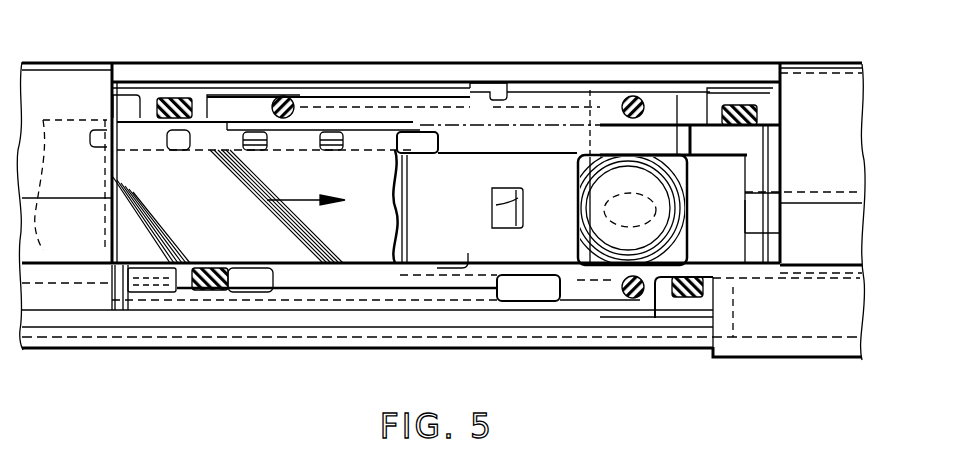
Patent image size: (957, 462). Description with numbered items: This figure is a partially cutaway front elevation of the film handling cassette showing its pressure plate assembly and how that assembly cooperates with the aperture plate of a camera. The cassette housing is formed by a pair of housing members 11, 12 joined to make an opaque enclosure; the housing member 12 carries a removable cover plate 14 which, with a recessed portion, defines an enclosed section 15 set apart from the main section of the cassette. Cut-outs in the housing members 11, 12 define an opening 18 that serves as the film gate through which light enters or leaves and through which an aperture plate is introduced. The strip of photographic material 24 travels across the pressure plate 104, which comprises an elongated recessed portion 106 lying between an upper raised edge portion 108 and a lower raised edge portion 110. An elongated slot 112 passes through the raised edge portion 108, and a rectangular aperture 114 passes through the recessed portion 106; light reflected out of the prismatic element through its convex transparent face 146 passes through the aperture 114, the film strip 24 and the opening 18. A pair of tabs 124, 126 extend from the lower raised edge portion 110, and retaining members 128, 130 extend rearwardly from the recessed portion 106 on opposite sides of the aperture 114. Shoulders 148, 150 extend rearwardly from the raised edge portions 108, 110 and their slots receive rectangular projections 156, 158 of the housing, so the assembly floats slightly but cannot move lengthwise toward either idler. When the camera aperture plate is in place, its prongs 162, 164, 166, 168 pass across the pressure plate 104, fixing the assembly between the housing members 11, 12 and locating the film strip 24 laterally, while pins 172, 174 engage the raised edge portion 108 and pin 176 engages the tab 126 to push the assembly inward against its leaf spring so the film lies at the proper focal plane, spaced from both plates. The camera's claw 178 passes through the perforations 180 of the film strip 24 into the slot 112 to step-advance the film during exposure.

The housing member 11 is at (443, 62).
The housing member 12 is at (790, 362).
The removable cover plate 14 is at (367, 342).
The enclosed section 15 is at (333, 332).
The opening 18 is at (113, 80).
The strip of photographic material 24 is at (178, 210).
The pressure plate 104 is at (763, 123).
The elongated recessed portion 106 is at (457, 224).
The raised edge portion 108 is at (550, 100).
The raised edge portion 110 is at (537, 272).
The elongated slot 112 is at (420, 127).
The rectangular aperture 114 is at (593, 195).
The tab 124 is at (153, 290).
The tab 126 is at (583, 300).
The retaining member 128 is at (747, 200).
The retaining member 130 is at (497, 200).
The convex transparent face 146 is at (657, 170).
The shoulder 148 is at (487, 98).
The shoulder 150 is at (463, 297).
The rectangular projection 156 is at (397, 97).
The rectangular projection 158 is at (452, 270).
The prong 162 is at (177, 100).
The prong 164 is at (222, 292).
The prong 166 is at (743, 110).
The prong 168 is at (700, 300).
The pin 172 is at (283, 97).
The pin 174 is at (632, 100).
The pin 176 is at (637, 300).
The claw 178 is at (333, 150).
The perforations 180 is at (190, 135).